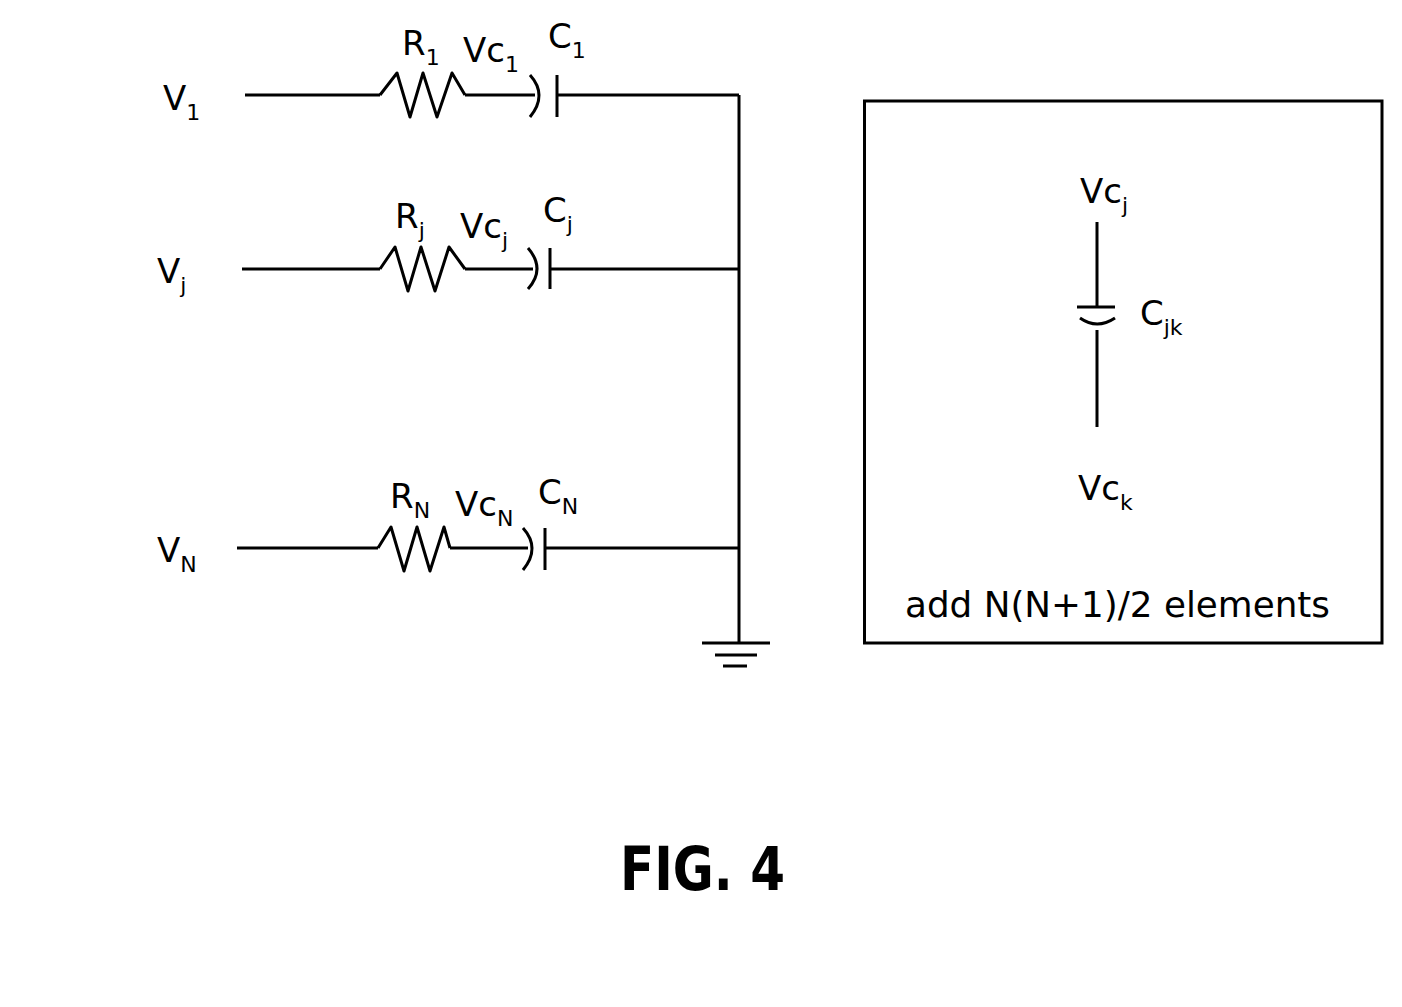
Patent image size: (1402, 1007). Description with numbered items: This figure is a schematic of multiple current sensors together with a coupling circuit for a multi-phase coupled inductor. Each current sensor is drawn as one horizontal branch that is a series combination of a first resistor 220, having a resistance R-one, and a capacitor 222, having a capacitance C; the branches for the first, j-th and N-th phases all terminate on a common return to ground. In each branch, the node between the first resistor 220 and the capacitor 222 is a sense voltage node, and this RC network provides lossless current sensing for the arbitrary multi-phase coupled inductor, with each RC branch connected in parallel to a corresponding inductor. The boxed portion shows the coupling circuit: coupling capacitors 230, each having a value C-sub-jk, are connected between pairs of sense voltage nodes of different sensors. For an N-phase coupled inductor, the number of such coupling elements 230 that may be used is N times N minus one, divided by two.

The first resistor 220 is at (382, 110).
The capacitor 222 is at (560, 108).
The coupling capacitor 230 is at (1086, 323).